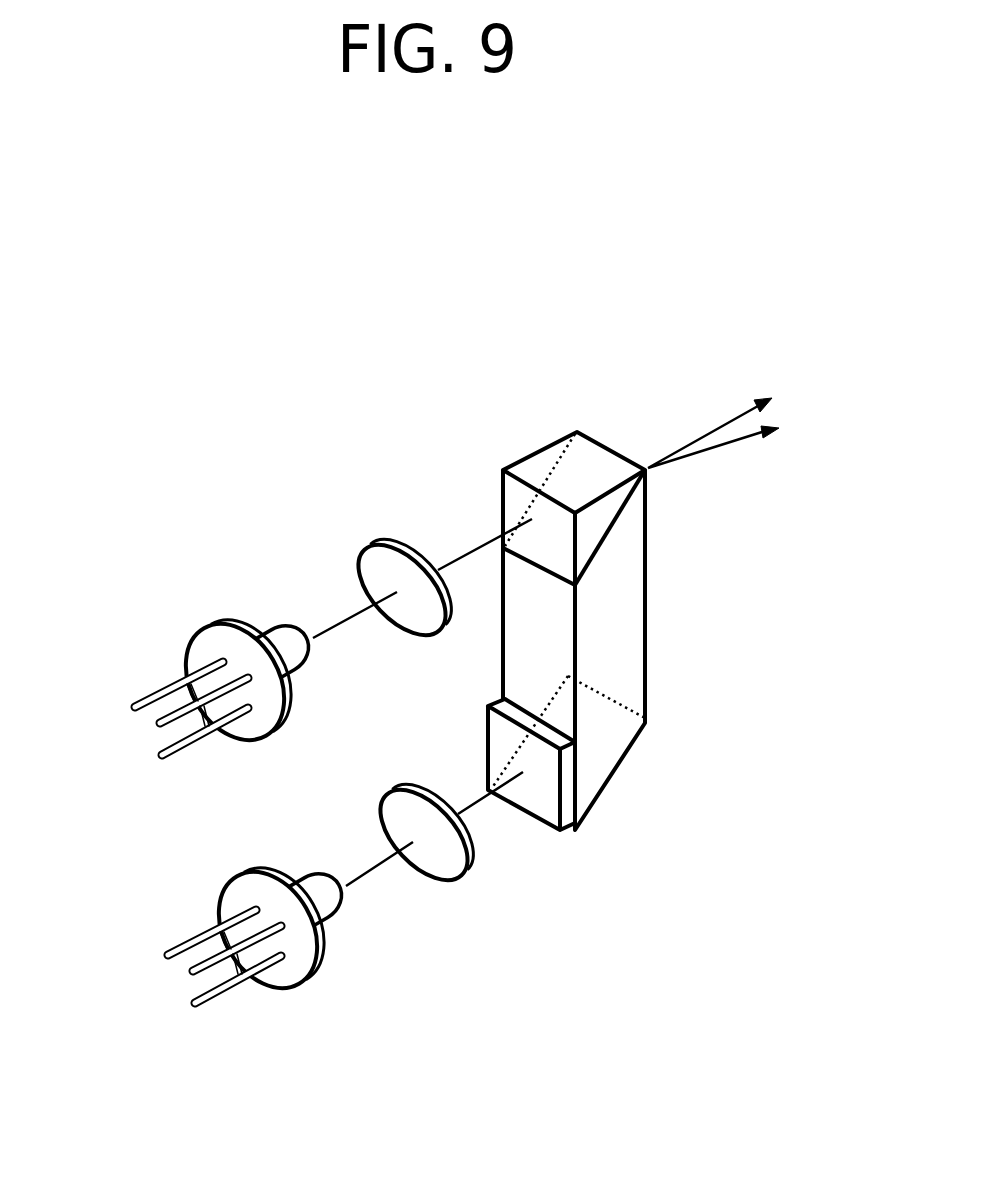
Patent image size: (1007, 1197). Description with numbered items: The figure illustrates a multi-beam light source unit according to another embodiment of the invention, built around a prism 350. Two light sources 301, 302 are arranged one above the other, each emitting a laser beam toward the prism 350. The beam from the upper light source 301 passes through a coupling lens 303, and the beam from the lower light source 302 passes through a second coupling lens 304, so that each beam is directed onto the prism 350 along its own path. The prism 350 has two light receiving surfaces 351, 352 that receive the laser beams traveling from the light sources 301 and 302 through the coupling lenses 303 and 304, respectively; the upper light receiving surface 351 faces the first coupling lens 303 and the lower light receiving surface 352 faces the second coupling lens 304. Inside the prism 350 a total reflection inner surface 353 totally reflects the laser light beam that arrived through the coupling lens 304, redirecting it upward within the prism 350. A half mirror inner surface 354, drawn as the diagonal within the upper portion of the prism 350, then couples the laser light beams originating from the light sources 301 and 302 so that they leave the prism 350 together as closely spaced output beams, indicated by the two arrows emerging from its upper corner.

The light source 301 is at (190, 638).
The light source 302 is at (305, 967).
The coupling lens 303 is at (375, 570).
The coupling lens 304 is at (442, 865).
The prism 350 is at (591, 552).
The light receiving surface 351 is at (513, 498).
The light receiving surface 352 is at (537, 790).
The total reflection inner surface 353 is at (605, 735).
The half mirror inner surface 354 is at (588, 533).